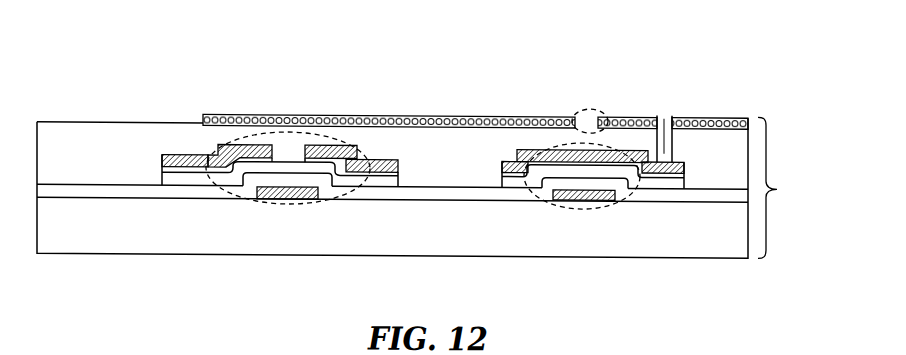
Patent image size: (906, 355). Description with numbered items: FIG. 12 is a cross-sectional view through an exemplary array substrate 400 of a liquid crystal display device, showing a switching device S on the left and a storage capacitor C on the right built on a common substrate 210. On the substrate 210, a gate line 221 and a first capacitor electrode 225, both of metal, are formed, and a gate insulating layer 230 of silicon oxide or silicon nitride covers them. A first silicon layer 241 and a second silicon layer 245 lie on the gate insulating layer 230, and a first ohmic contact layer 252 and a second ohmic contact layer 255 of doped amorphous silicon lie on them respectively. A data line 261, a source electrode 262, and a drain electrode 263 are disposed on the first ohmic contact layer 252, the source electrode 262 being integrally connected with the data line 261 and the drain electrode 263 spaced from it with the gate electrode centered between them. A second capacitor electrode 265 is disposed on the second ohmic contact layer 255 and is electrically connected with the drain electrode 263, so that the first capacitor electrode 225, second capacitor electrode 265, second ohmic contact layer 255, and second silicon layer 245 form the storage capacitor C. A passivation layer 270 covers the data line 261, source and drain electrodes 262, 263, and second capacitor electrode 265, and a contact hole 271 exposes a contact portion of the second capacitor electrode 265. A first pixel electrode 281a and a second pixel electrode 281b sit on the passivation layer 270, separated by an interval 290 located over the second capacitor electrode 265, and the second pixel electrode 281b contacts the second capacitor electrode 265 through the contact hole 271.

The substrate 210 is at (373, 227).
The gate line 221 is at (278, 198).
The first capacitor electrode 225 is at (583, 198).
The gate insulating layer 230 is at (462, 194).
The first silicon layer 241 is at (283, 165).
The second silicon layer 245 is at (598, 168).
The first ohmic contact layer 252 is at (208, 152).
The second ohmic contact layer 255 is at (540, 148).
The data line 261 is at (177, 154).
The source electrode 262 is at (245, 143).
The drain electrode 263 is at (355, 144).
The second capacitor electrode 265 is at (615, 146).
The passivation layer 270 is at (111, 139).
The contact hole 271 is at (665, 105).
The first pixel electrode 281a is at (445, 112).
The second pixel electrode 281b is at (710, 118).
The interval 290 is at (582, 149).
The array substrate 400 is at (785, 187).
The switching device S is at (370, 144).
The storage capacitor C is at (572, 139).